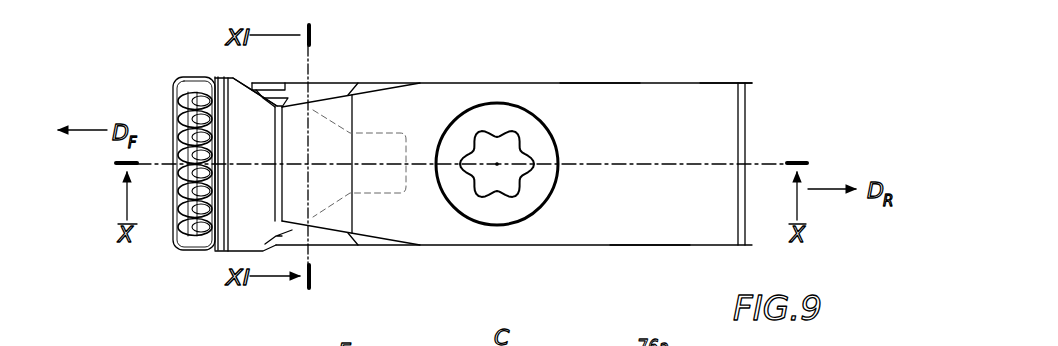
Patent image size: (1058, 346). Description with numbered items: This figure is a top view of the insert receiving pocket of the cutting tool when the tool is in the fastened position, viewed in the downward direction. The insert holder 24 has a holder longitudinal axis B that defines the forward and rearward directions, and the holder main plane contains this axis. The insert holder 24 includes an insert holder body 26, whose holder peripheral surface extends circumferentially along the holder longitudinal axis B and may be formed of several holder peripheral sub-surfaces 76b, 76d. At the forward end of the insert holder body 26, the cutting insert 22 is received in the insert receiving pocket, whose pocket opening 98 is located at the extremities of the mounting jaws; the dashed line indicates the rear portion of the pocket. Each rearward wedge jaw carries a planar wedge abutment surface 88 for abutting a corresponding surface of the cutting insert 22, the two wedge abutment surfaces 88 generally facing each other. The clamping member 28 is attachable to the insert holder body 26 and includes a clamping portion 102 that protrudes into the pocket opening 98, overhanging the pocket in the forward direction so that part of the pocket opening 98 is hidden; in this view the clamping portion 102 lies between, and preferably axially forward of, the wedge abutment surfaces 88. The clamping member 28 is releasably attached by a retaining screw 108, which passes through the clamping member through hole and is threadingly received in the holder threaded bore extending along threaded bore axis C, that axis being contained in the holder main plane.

The cutting insert 22 is at (169, 255).
The insert holder 24 is at (738, 50).
The insert holder body 26 is at (346, 78).
The clamping member 28 is at (630, 111).
The holder peripheral sub-surface 76b is at (597, 82).
The holder peripheral sub-surface 76d is at (647, 246).
The wedge abutment surface 88 is at (334, 124).
The pocket opening 98 is at (208, 249).
The clamping portion 102 is at (292, 146).
The retaining screw 108 is at (482, 103).
The threaded bore axis C is at (497, 164).
The holder longitudinal axis B is at (775, 164).